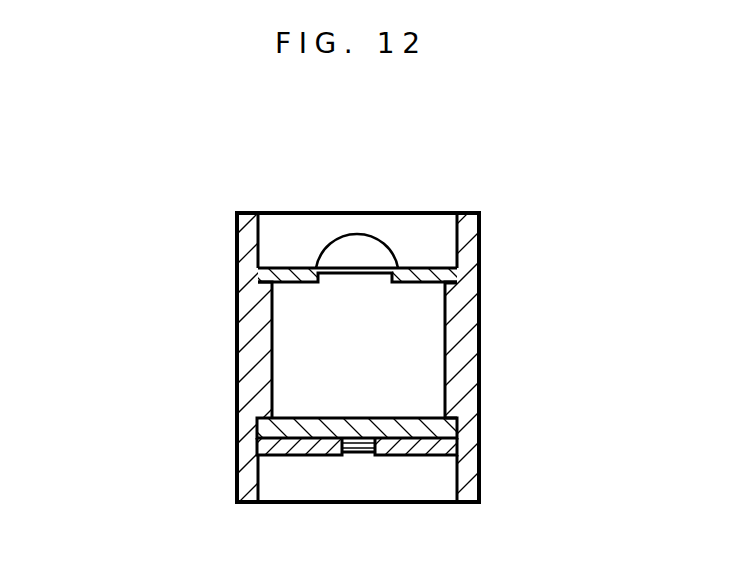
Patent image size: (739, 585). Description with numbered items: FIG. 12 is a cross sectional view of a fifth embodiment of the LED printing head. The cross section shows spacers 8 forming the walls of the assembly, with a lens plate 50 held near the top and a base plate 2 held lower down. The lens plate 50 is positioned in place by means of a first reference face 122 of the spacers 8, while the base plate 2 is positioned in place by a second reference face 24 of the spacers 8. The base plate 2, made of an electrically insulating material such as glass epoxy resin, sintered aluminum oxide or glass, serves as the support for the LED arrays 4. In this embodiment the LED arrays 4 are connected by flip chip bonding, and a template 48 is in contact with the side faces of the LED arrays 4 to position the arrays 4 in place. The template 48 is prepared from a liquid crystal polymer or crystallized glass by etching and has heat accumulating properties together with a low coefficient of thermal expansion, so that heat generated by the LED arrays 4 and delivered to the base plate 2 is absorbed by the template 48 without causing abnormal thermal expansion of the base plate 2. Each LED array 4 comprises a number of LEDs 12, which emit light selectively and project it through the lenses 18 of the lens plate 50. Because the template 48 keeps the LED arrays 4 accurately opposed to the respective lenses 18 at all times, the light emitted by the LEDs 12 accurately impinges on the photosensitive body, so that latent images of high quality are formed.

The base plate 2 is at (270, 430).
The LED array 4 is at (353, 455).
The spacer 8 is at (247, 343).
The LED 12 is at (363, 453).
The lens 18 is at (355, 250).
The second reference face 24 is at (452, 412).
The template 48 is at (410, 452).
The lens plate 50 is at (418, 267).
The first reference face 122 is at (448, 288).